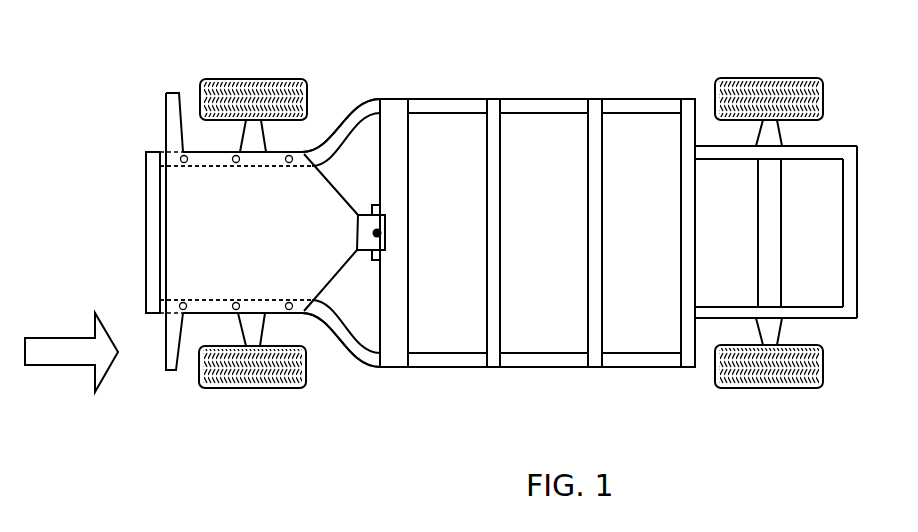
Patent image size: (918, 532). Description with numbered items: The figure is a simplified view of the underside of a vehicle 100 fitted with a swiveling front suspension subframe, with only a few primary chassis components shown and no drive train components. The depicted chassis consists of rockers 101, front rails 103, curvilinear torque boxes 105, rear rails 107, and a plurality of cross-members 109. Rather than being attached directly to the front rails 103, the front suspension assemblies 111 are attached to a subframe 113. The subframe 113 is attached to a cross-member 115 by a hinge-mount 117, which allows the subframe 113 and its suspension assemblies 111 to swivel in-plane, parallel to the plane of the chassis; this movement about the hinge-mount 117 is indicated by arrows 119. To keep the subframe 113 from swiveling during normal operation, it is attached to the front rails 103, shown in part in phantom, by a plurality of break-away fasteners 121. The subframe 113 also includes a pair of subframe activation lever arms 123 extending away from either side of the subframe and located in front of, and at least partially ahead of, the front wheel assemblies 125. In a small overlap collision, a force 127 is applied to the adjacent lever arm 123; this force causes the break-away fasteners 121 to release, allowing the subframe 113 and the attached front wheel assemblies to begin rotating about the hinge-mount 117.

The vehicle 100 is at (653, 56).
The rockers 101 is at (541, 104).
The front rails 103 is at (165, 165).
The curvilinear torque boxes 105 is at (347, 122).
The rear rails 107 is at (823, 152).
The cross-members 109 is at (152, 247).
The front suspension assemblies 111 is at (316, 126).
The subframe 113 is at (265, 241).
The cross-member 115 is at (400, 177).
The hinge-mount 117 is at (382, 233).
The arrows 119 is at (359, 265).
The break-away fasteners 121 is at (290, 163).
The subframe activation lever arms 123 is at (166, 112).
The front wheel assemblies 125 is at (200, 84).
The force 127 is at (79, 365).